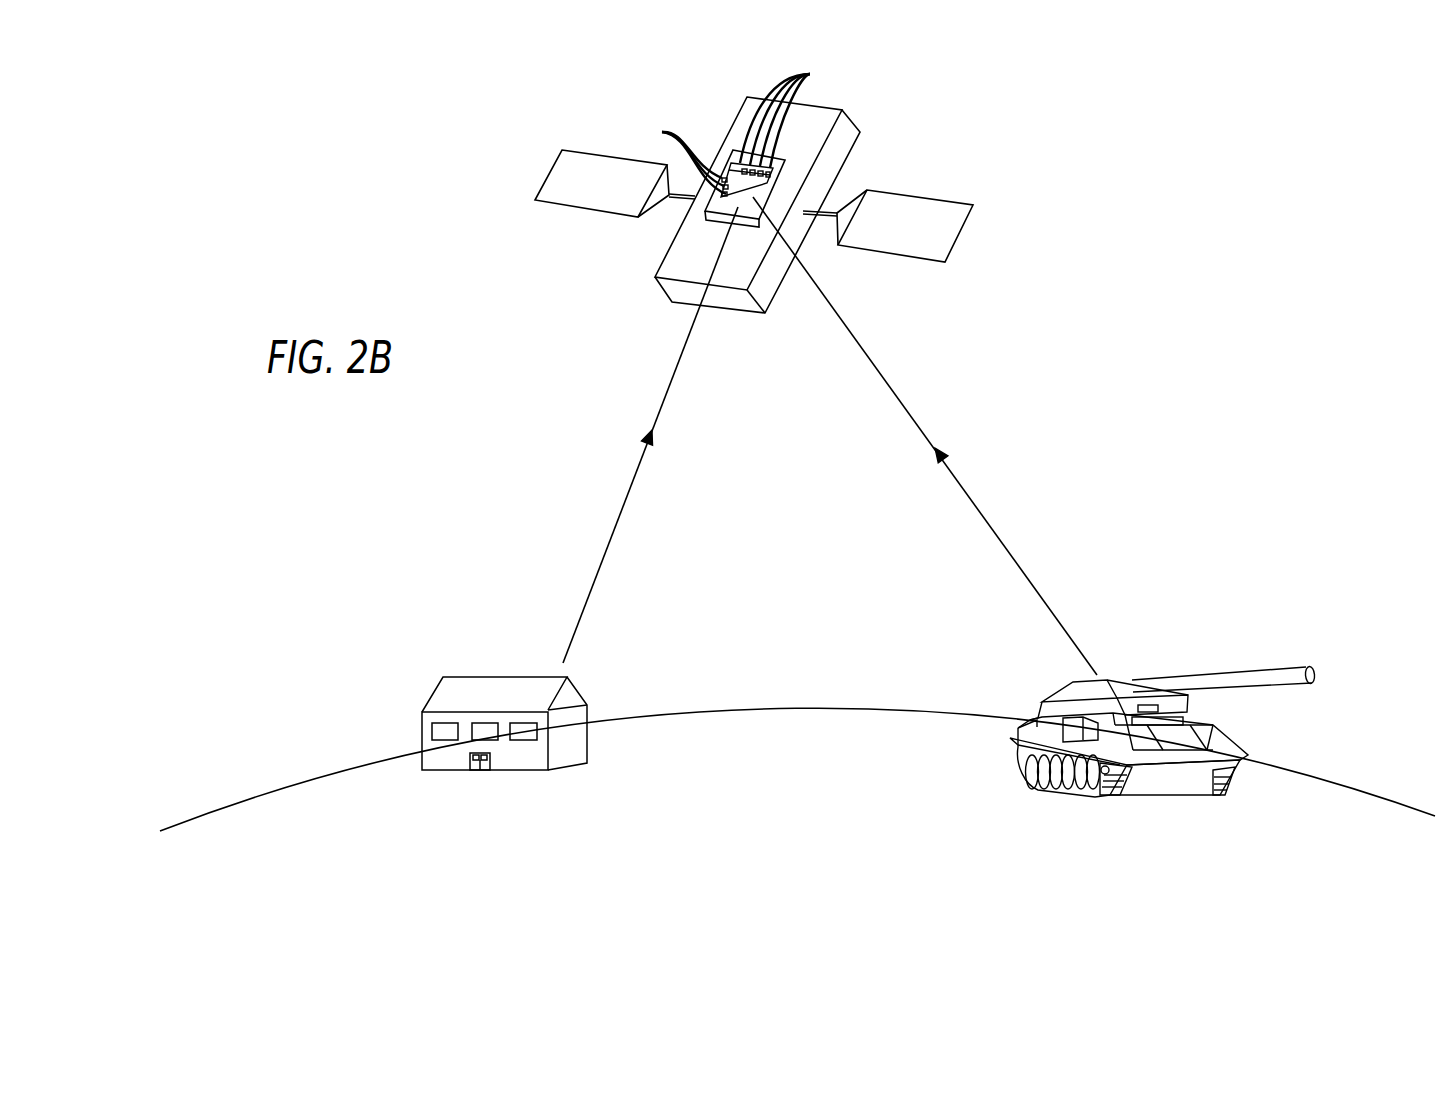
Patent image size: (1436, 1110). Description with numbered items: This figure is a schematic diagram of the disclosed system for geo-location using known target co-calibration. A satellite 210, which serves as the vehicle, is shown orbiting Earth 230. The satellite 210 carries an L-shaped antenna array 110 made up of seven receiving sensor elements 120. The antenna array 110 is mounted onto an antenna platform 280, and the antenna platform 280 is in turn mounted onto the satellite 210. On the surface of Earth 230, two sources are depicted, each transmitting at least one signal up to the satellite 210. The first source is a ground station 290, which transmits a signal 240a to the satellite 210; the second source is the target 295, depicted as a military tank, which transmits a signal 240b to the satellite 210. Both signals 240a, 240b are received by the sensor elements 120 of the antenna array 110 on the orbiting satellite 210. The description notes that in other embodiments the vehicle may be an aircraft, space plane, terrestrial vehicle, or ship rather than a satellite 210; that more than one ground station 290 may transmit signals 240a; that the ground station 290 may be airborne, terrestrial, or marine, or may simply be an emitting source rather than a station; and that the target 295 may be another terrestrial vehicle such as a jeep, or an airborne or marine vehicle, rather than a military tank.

The antenna array 110 is at (738, 160).
The receiving sensor elements 120 is at (735, 128).
The satellite 210 is at (826, 168).
The Earth 230 is at (903, 757).
The signal 240a is at (645, 447).
The signal 240b is at (948, 465).
The antenna platform 280 is at (706, 228).
The ground station 290 is at (452, 697).
The target 295 is at (1140, 682).